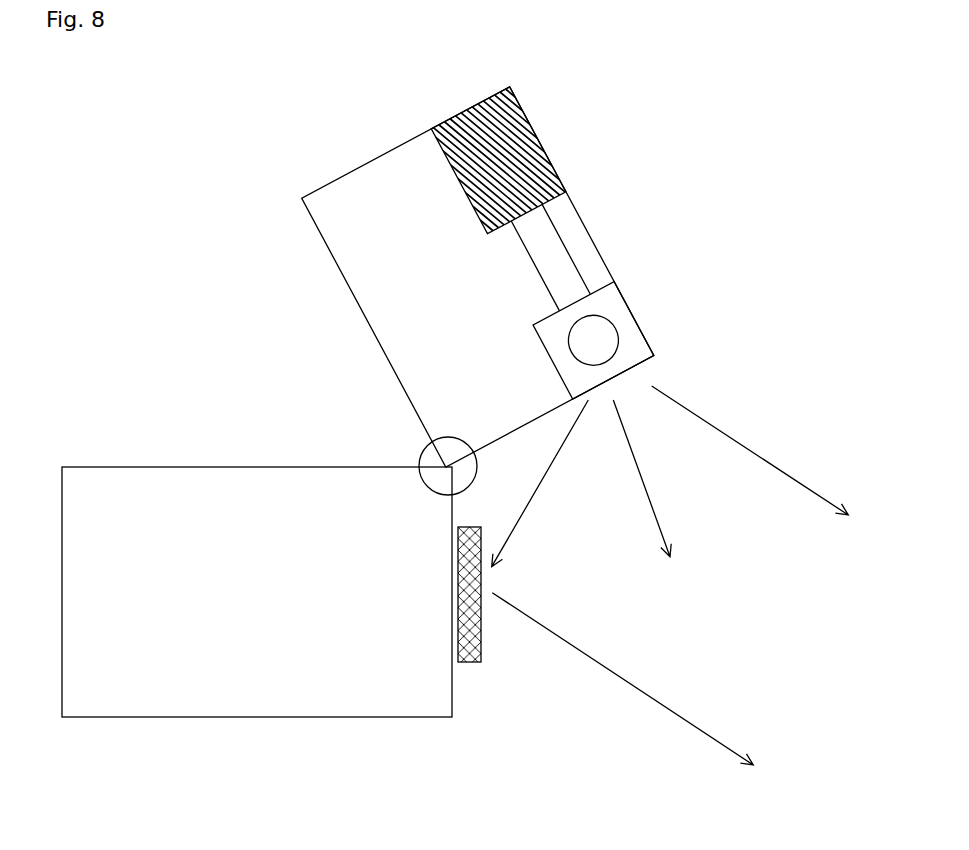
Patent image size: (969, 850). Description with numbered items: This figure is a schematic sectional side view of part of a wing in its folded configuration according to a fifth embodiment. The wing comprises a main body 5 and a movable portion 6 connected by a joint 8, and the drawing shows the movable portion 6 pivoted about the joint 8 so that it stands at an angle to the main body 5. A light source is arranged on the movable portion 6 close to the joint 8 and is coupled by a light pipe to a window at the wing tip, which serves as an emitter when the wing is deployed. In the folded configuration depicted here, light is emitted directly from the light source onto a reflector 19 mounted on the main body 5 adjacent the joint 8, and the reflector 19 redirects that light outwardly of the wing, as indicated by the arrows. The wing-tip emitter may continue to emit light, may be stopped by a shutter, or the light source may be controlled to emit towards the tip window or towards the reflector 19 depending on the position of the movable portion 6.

The main body 5 is at (106, 481).
The movable portion 6 is at (456, 266).
The joint 8 is at (445, 465).
The reflector 19 is at (477, 647).